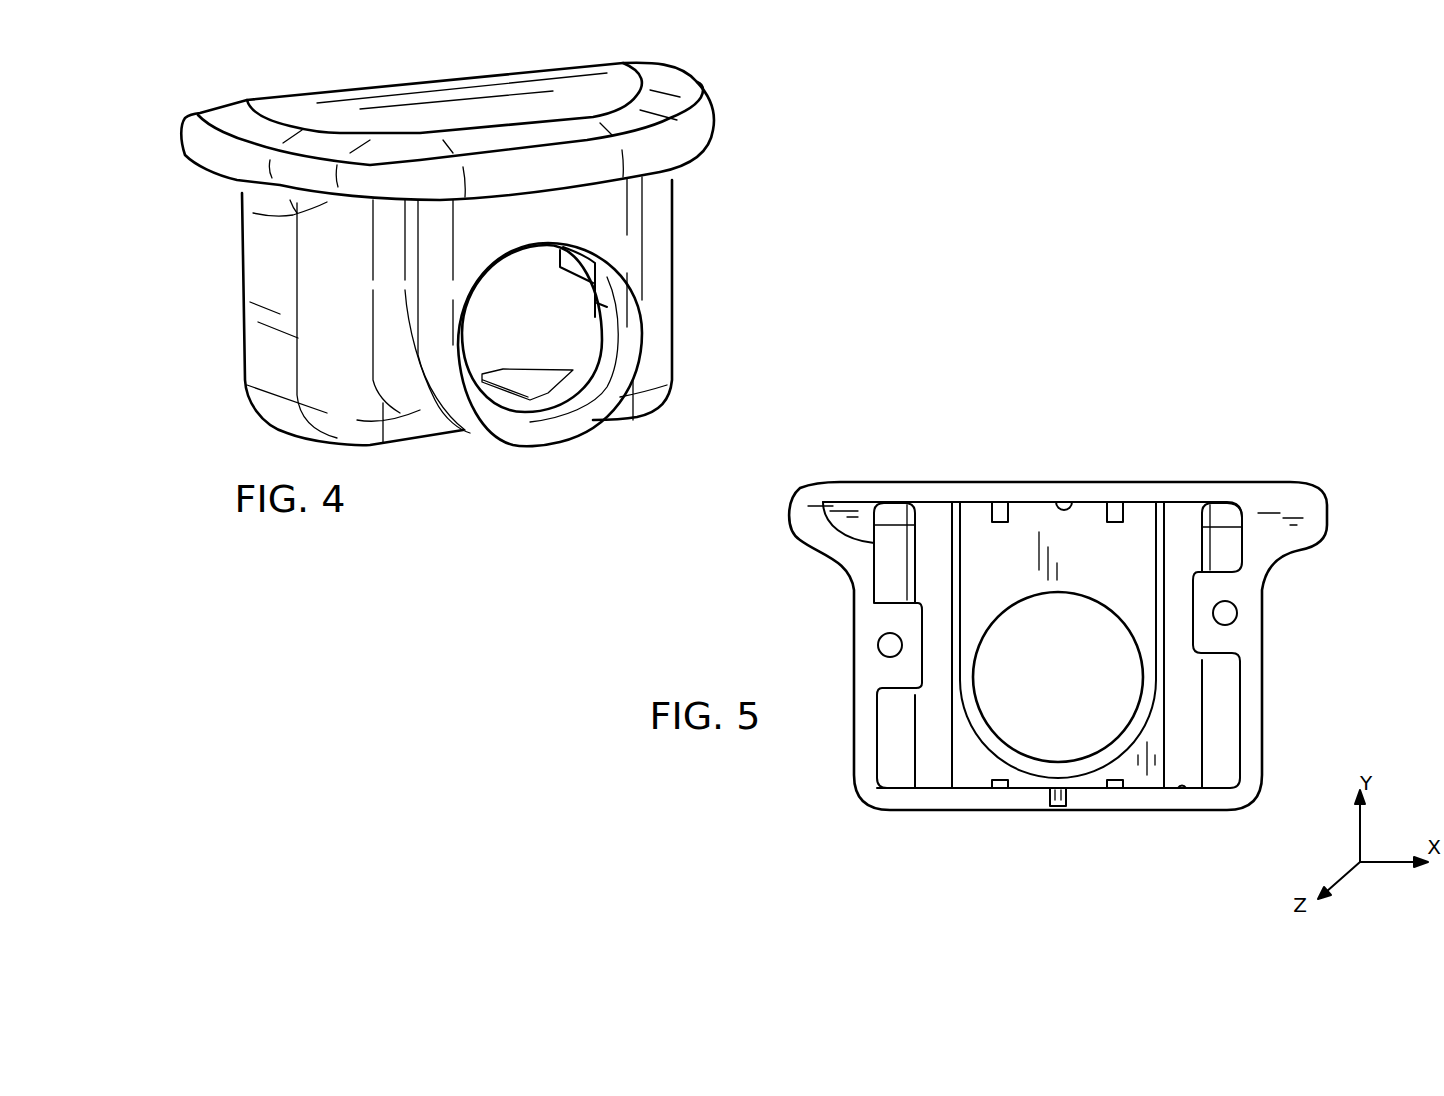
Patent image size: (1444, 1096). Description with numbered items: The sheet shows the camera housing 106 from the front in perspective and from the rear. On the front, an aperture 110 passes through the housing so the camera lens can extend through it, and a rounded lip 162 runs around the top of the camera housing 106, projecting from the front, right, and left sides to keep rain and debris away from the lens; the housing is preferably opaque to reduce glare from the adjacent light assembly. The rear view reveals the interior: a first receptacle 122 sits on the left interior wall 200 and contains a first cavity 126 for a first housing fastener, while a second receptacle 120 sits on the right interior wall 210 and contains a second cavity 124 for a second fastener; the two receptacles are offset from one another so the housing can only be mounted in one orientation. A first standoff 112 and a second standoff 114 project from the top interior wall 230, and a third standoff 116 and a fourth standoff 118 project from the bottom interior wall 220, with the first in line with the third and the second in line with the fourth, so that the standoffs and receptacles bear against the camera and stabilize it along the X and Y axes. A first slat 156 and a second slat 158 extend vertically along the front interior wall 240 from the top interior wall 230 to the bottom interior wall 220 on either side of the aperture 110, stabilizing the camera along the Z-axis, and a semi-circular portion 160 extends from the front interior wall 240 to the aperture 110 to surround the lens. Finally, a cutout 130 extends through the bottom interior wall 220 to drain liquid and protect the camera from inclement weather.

In FIG. 4, the camera housing 106 is at (661, 222).
In FIG. 5, the camera housing 106 is at (1262, 692).
In FIG. 4, the aperture 110 is at (555, 313).
In FIG. 5, the aperture 110 is at (1042, 725).
In FIG. 5, the first standoff 112 is at (1000, 500).
In FIG. 5, the second standoff 114 is at (1115, 500).
In FIG. 5, the third standoff 116 is at (1000, 790).
In FIG. 5, the fourth standoff 118 is at (1115, 790).
In FIG. 5, the second receptacle 120 is at (1228, 583).
In FIG. 5, the first receptacle 122 is at (885, 618).
In FIG. 5, the second cavity 124 is at (1237, 615).
In FIG. 5, the first cavity 126 is at (878, 645).
In FIG. 5, the cutout 130 is at (1058, 795).
In FIG. 5, the first slat 156 is at (933, 517).
In FIG. 5, the second slat 158 is at (1185, 517).
In FIG. 5, the semi-circular portion 160 is at (993, 740).
In FIG. 4, the lip 162 is at (217, 139).
In FIG. 5, the lip 162 is at (1297, 487).
In FIG. 5, the left interior wall 200 is at (826, 512).
In FIG. 5, the right interior wall 210 is at (1242, 752).
In FIG. 5, the bottom interior wall 220 is at (1180, 782).
In FIG. 5, the top interior wall 230 is at (1068, 508).
In FIG. 5, the front interior wall 240 is at (962, 735).